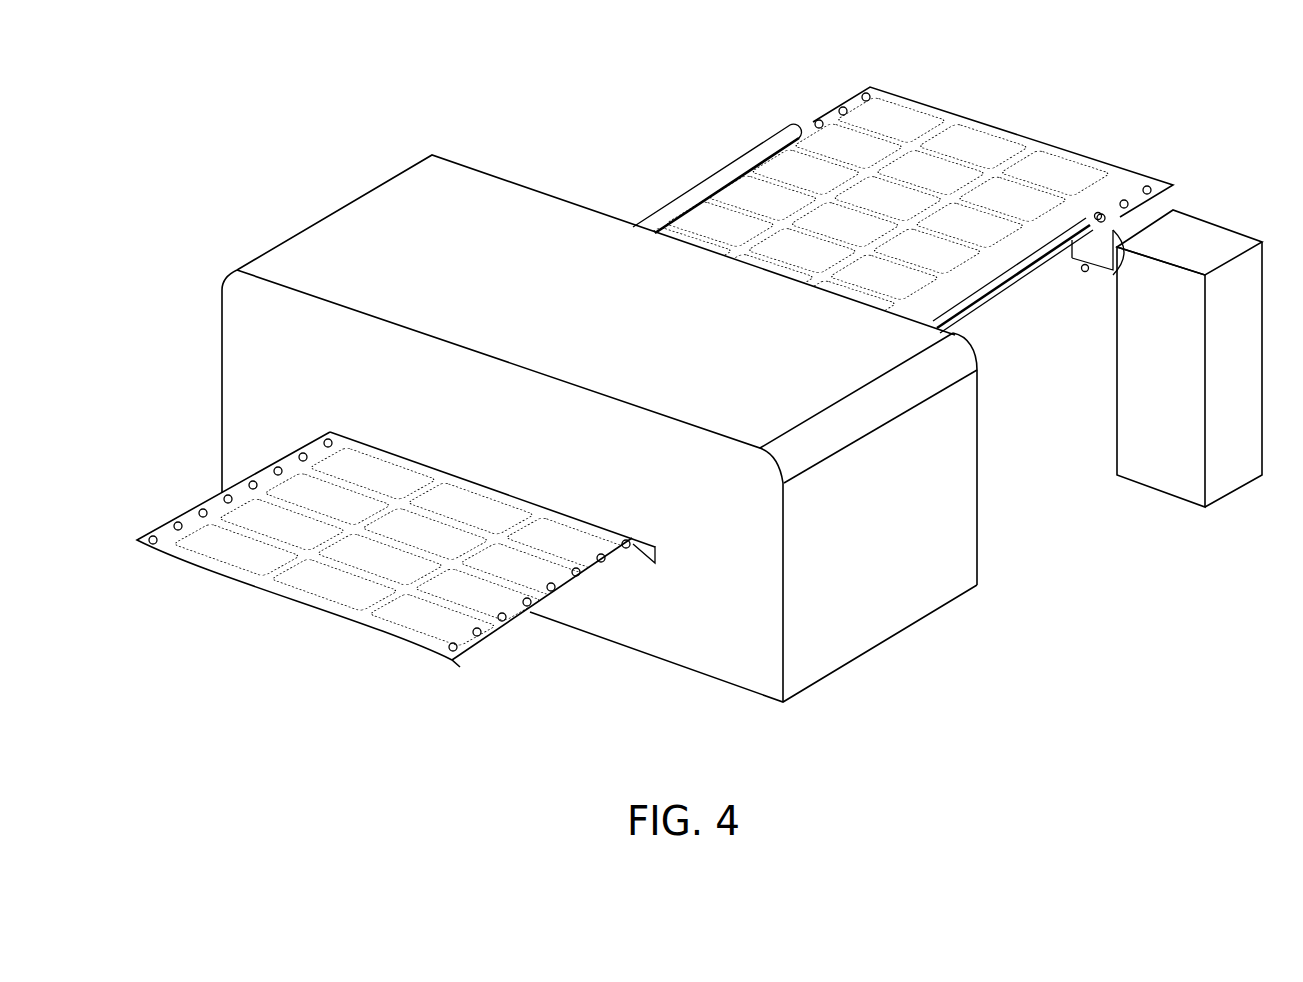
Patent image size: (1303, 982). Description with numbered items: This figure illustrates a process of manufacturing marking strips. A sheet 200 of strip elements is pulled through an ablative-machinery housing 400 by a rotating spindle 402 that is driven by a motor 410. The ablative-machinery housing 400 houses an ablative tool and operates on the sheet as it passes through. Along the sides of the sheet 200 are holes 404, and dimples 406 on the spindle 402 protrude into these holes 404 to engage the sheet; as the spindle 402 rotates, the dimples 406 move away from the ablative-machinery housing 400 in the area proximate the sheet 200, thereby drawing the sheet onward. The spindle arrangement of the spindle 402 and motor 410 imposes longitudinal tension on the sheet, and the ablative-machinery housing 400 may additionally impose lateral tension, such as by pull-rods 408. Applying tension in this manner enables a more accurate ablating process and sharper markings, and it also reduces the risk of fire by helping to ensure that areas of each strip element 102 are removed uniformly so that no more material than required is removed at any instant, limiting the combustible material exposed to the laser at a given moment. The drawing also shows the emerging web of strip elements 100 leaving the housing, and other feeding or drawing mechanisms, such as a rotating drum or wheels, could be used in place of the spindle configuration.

The label web 100 is at (285, 597).
The strip element 102 is at (518, 624).
The sheet 200 is at (208, 502).
The ablative-machinery housing 400 is at (337, 208).
The rotating spindle 402 is at (790, 127).
The holes 404 is at (457, 651).
The dimples 406 is at (815, 119).
The pull-rods 408 is at (707, 181).
The motor 410 is at (1118, 477).